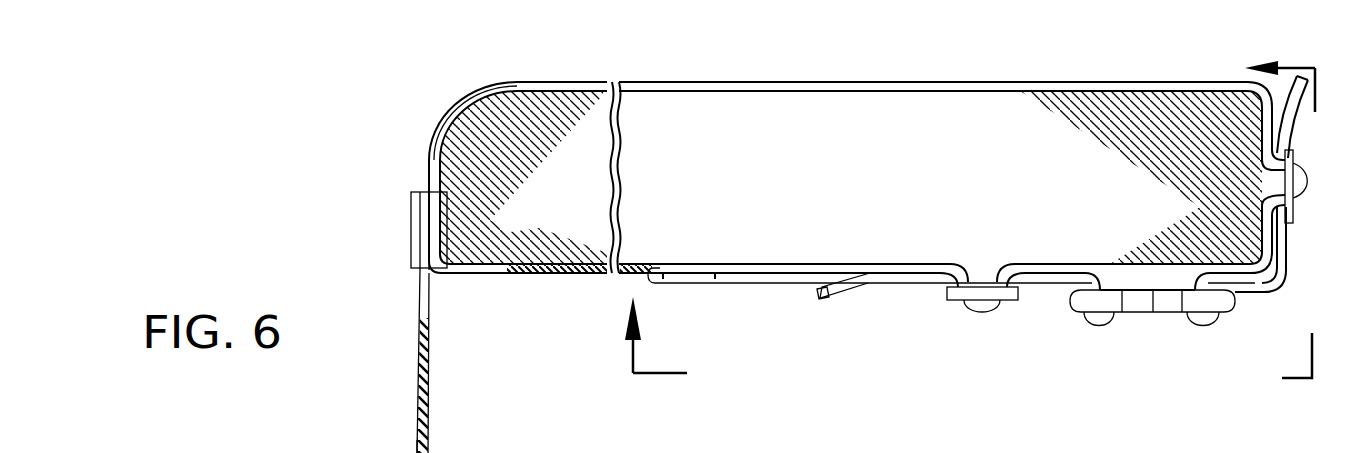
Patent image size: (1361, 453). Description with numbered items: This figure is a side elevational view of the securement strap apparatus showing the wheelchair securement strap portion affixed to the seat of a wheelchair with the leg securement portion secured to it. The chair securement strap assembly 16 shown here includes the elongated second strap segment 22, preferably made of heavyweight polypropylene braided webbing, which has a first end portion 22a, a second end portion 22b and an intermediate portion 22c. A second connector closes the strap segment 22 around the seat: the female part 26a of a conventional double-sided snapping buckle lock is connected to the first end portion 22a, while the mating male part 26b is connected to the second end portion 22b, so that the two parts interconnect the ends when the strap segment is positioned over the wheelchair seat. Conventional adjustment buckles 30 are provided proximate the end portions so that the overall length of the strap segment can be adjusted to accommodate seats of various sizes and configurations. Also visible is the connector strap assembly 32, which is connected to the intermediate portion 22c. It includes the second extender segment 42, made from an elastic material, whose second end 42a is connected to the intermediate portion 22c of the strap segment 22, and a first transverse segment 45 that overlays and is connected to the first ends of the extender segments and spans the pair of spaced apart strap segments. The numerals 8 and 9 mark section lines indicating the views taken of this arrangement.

The second strap segment 22 is at (452, 89).
The intermediate portion 22c is at (447, 130).
The chair securement strap assembly 16 is at (412, 167).
The first transverse segment 45 is at (412, 217).
The second end of extender segment 42a is at (427, 235).
The second extender segment 42 is at (430, 388).
The connector strap assembly 32 is at (393, 445).
The section line 8 is at (321, 446).
The first end portion 22a is at (826, 274).
The adjustment buckle 30 is at (982, 296).
The male part of second connector 26b is at (1092, 305).
The female part of second connector 26a is at (1203, 305).
The second end portion 22b is at (1262, 278).
The section line 9- 9 is at (980, 239).